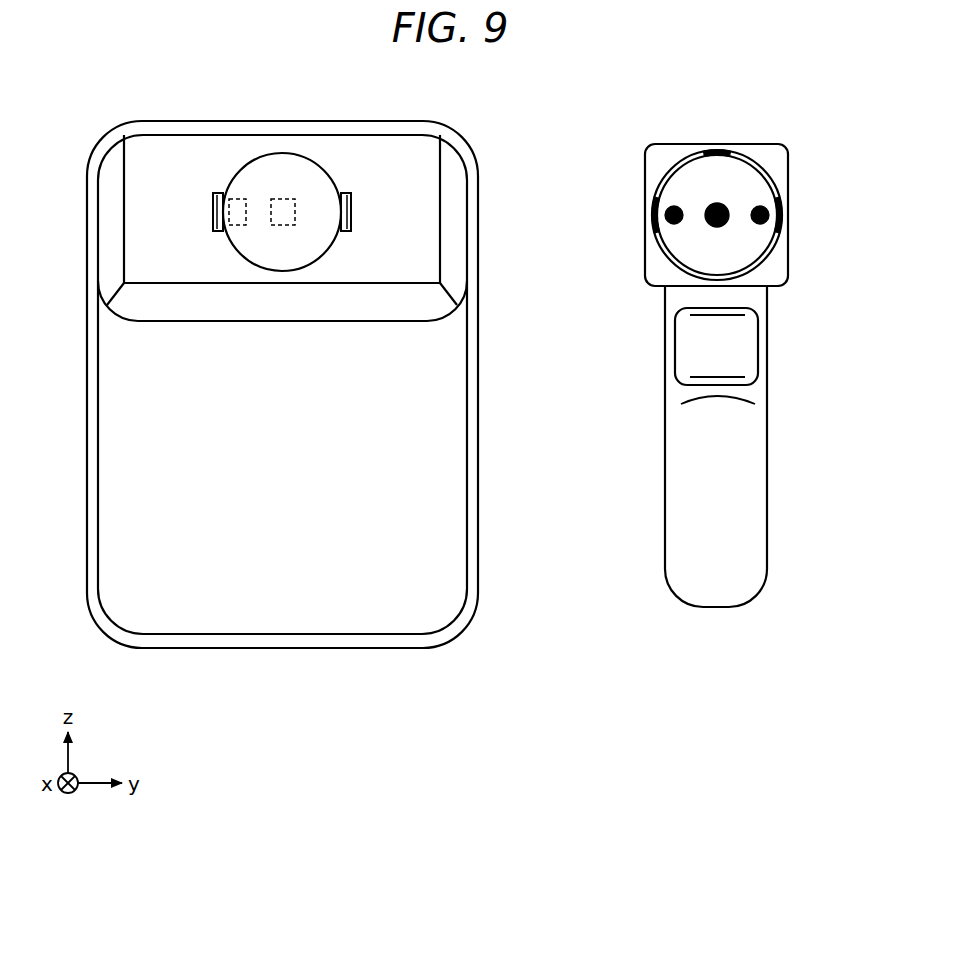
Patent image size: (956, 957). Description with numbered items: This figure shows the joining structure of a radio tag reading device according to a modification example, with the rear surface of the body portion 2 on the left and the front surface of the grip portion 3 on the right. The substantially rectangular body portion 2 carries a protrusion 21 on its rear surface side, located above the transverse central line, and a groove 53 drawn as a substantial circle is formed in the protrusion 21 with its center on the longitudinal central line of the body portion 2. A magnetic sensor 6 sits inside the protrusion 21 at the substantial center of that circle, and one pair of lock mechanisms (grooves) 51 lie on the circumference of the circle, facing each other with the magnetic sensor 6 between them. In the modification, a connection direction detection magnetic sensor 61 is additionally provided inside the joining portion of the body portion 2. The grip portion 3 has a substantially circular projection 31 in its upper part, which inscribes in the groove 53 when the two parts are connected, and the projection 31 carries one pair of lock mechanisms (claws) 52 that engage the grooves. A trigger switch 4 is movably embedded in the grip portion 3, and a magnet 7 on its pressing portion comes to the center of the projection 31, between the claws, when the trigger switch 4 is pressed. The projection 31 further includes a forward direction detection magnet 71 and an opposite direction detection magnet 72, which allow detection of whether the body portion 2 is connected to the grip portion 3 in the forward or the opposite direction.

The body portion 2 is at (150, 372).
The protrusion 21 is at (213, 150).
The magnetic sensor 6 is at (283, 153).
The lock mechanisms (grooves) 51 is at (208, 212).
The connection direction detection magnetic sensor 61 is at (232, 196).
The groove 53 is at (289, 197).
The grip portion 3 is at (745, 460).
The trigger switch 4 is at (743, 347).
The projection 31 is at (704, 148).
The lock mechanisms (claws) 52 is at (648, 215).
The magnet 7 is at (716, 200).
The forward direction detection magnet 71 is at (760, 202).
The opposite direction detection magnet 72 is at (673, 201).